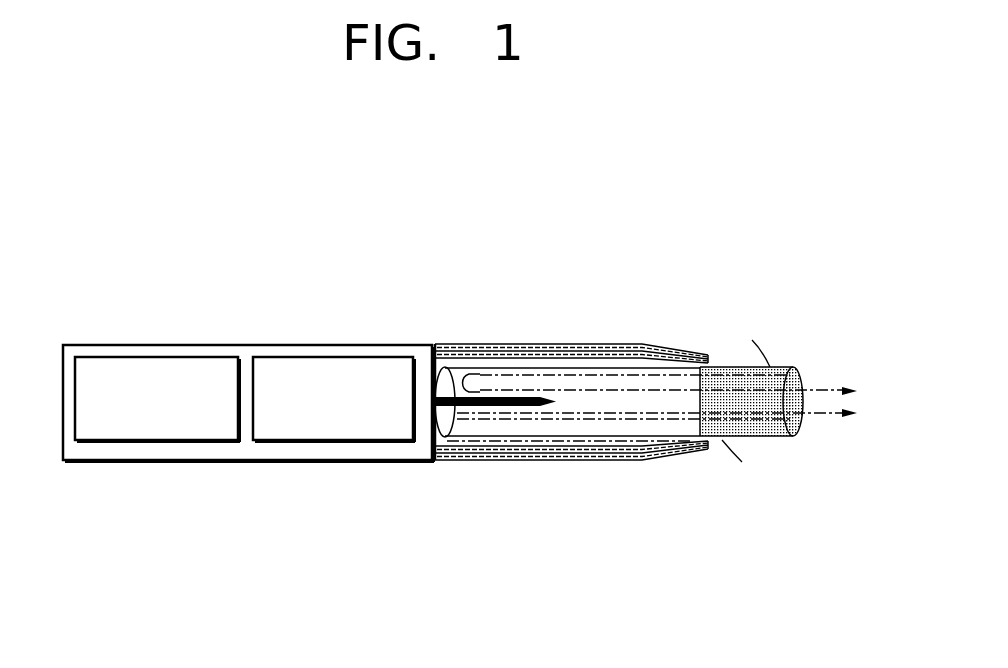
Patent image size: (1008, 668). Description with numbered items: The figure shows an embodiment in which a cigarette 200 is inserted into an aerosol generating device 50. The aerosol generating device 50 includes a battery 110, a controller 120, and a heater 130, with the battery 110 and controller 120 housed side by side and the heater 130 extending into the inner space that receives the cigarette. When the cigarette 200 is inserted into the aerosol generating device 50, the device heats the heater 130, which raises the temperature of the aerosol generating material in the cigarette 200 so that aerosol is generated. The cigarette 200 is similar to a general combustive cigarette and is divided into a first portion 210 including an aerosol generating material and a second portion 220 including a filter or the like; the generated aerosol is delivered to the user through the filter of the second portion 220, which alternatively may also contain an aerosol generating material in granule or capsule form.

The aerosol generating device 50 is at (398, 325).
The battery 110 is at (164, 356).
The controller 120 is at (352, 356).
The heater 130 is at (493, 395).
The cigarette 200 is at (777, 446).
The first portion 210 is at (582, 362).
The second portion 220 is at (790, 367).